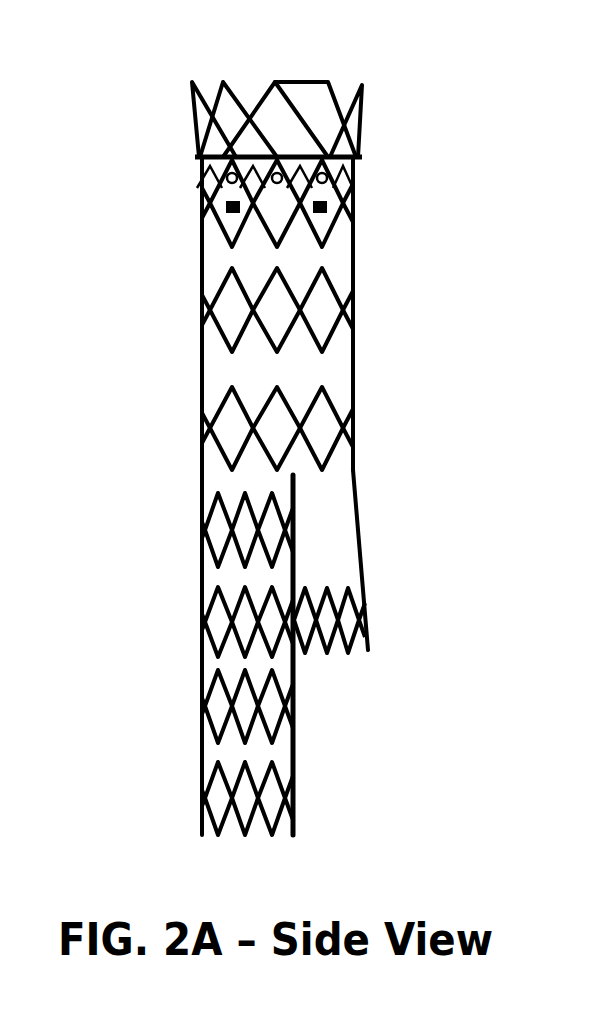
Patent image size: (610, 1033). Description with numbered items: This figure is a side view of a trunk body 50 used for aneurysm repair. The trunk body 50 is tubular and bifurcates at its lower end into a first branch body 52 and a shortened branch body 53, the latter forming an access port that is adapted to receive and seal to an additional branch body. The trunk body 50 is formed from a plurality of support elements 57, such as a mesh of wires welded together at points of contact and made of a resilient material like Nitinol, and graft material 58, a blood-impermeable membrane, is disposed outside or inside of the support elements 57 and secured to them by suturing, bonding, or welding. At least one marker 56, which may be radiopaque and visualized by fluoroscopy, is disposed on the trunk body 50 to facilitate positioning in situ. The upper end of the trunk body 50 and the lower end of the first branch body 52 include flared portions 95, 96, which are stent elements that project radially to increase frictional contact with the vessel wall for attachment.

The trunk body 50 is at (499, 271).
The flared portion 95 is at (195, 90).
The marker 56 is at (352, 197).
The support elements 57 is at (355, 412).
The graft material 58 is at (247, 478).
The shortened branch body 53 is at (341, 537).
The first branch body 52 is at (217, 660).
The flared portion 96 is at (203, 833).